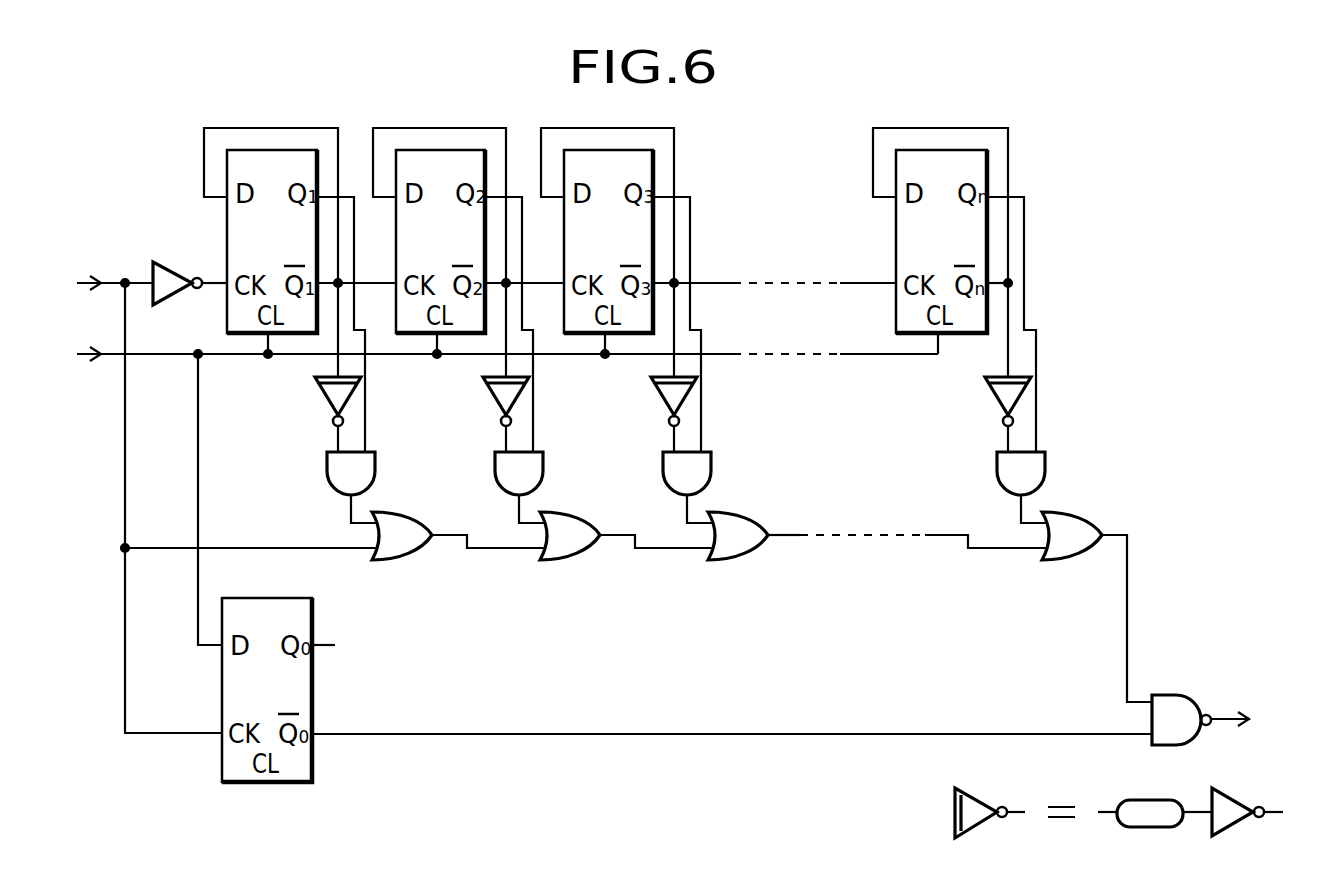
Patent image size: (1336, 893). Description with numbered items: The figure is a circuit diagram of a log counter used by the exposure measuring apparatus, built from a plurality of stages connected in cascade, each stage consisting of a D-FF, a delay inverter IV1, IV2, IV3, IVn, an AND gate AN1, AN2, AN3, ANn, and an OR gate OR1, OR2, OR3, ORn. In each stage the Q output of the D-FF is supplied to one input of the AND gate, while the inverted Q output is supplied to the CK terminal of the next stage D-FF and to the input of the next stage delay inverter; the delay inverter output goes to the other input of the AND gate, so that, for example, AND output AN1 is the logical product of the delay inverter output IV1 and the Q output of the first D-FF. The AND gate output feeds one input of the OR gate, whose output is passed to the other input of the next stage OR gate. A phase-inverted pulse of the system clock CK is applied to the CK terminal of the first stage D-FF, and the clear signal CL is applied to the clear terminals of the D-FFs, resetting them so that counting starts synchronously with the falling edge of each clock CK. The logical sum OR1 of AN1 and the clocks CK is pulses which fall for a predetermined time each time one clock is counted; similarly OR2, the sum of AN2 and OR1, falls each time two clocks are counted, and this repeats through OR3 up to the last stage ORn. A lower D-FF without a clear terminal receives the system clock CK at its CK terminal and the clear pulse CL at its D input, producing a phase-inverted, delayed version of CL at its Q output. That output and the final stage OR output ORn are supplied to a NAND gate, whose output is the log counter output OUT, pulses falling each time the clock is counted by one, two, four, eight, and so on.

The system clock CK is at (205, 497).
The clear signal CL is at (485, 491).
The output of the log counter OUT is at (1237, 720).
The delay inverter IV1 is at (314, 414).
The delay inverter IV2 is at (482, 414).
The delay inverter IV3 is at (650, 414).
The delay inverter IVn is at (983, 414).
The AND gate AN1 is at (325, 488).
The AND gate AN2 is at (494, 488).
The AND gate AN3 is at (662, 488).
The AND gate ANn is at (994, 488).
The OR gate OR1 is at (459, 552).
The OR gate OR2 is at (627, 552).
The OR gate OR3 is at (878, 552).
The OR gate ORn is at (1098, 595).